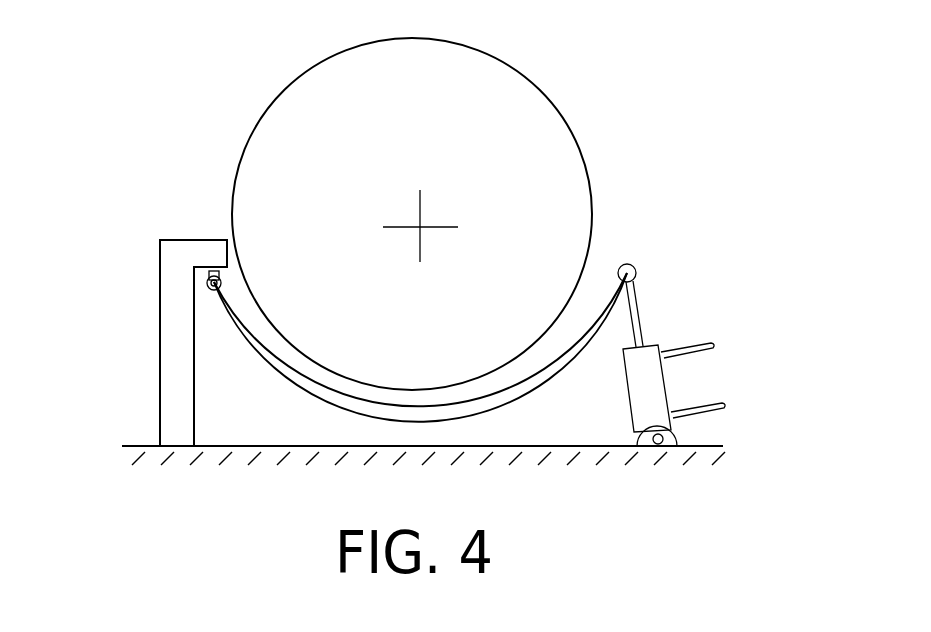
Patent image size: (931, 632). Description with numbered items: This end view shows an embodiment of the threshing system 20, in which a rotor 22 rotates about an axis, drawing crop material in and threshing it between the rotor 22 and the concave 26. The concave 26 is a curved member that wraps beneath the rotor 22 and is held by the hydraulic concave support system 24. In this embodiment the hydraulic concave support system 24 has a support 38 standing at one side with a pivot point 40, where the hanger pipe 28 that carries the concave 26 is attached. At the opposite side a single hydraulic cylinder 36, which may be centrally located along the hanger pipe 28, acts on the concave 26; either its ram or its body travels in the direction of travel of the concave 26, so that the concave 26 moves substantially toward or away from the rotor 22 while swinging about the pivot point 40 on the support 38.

The threshing system 20 is at (680, 107).
The rotor 22 is at (538, 87).
The hydraulic concave support system 24 is at (745, 262).
The concave 26 is at (522, 397).
The hanger pipe 28 is at (119, 287).
The pivot point 40 is at (207, 283).
The hydraulic cylinder 36 is at (666, 377).
The support 38 is at (160, 386).